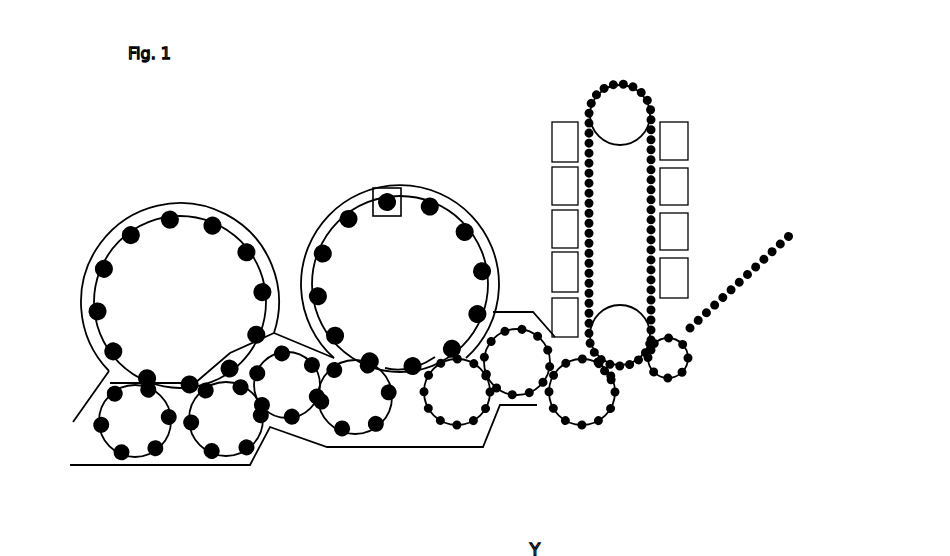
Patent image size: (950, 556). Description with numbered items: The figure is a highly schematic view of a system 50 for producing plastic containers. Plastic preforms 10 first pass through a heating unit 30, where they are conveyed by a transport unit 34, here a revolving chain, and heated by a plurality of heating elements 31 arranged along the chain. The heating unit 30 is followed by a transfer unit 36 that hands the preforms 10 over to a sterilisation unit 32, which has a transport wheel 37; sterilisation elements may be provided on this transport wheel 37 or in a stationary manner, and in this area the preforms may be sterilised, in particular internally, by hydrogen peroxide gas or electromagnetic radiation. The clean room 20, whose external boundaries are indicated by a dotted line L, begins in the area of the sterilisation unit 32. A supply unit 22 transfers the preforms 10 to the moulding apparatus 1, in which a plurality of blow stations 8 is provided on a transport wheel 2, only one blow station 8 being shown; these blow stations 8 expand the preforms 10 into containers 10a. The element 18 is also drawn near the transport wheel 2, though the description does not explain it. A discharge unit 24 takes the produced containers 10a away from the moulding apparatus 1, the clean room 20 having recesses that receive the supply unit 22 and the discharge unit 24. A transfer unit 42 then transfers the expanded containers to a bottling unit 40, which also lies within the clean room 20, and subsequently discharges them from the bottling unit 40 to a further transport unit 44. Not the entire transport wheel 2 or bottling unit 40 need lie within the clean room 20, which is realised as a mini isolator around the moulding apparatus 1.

The moulding apparatus 1 is at (380, 160).
The transport wheel 2 is at (445, 260).
The blow station 8 is at (398, 192).
The plastic preform 10 is at (613, 400).
The container 10a is at (398, 447).
The housing 18 is at (448, 200).
The clean room 20 is at (332, 190).
The supply unit 22 is at (473, 407).
The discharge unit 24 is at (350, 425).
The heating unit 30 is at (578, 92).
The heating element 31 is at (562, 142).
The sterilisation unit 32 is at (515, 292).
The transport unit 34 is at (625, 105).
The transfer unit 36 is at (572, 405).
The transport wheel 37 is at (515, 378).
The bottling unit 40 is at (150, 242).
The transfer unit 42 is at (247, 417).
The further transport unit 44 is at (118, 428).
The system 50 is at (277, 45).
The dotted line L is at (410, 445).